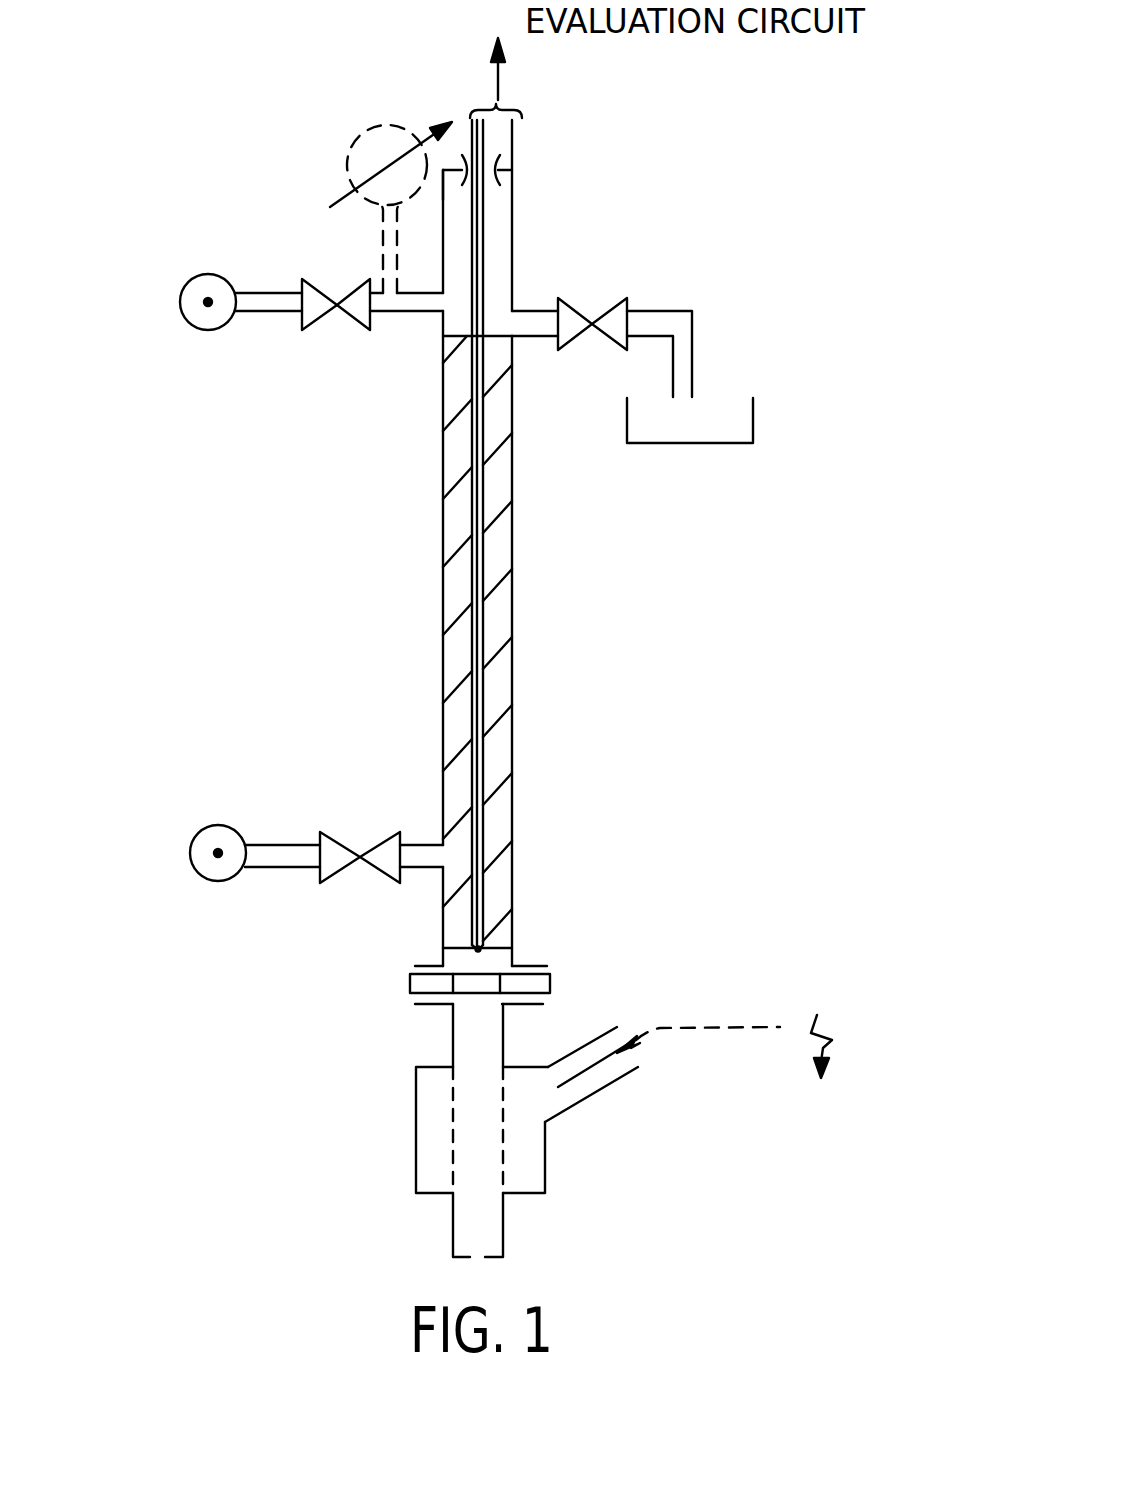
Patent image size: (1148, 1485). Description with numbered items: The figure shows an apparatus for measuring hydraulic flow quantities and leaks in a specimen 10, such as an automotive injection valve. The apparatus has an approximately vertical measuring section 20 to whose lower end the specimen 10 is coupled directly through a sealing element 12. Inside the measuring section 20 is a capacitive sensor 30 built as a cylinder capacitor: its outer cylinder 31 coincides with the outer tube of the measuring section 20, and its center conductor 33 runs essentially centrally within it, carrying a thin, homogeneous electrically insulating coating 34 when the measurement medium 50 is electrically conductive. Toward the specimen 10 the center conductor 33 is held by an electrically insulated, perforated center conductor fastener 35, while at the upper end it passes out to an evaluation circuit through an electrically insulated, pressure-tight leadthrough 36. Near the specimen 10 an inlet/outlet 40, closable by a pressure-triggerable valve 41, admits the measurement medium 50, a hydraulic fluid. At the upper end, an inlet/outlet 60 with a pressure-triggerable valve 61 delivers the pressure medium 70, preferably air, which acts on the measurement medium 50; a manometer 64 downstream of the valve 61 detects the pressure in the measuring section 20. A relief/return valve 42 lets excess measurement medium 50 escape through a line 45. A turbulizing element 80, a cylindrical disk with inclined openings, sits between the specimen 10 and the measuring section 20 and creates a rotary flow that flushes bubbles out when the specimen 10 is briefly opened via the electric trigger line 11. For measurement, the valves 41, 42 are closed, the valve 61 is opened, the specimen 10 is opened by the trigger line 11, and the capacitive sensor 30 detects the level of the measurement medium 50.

The specimen 10 is at (447, 1137).
The electric trigger line 11 is at (642, 1038).
The sealing element 12 is at (407, 986).
The measuring section 20 is at (485, 515).
The capacitive sensor 30 is at (443, 557).
The outer cylinder 31 is at (443, 627).
The center conductor 33 is at (475, 507).
The electrically insulating coating 34 is at (485, 607).
The center conductor fastener 35 is at (478, 947).
The leadthrough 36 is at (498, 156).
The inlet/outlet for measurement medium 40 is at (426, 855).
The valve 41 is at (332, 848).
The relief/return valve 42 is at (578, 320).
The line 45 is at (695, 355).
The measurement medium 50 is at (498, 672).
The inlet/outlet for pressure medium 60 is at (275, 305).
The valve 61 is at (355, 302).
The manometer 64 is at (388, 128).
The pressure medium 70 is at (500, 230).
The turbulizing element 80 is at (488, 985).